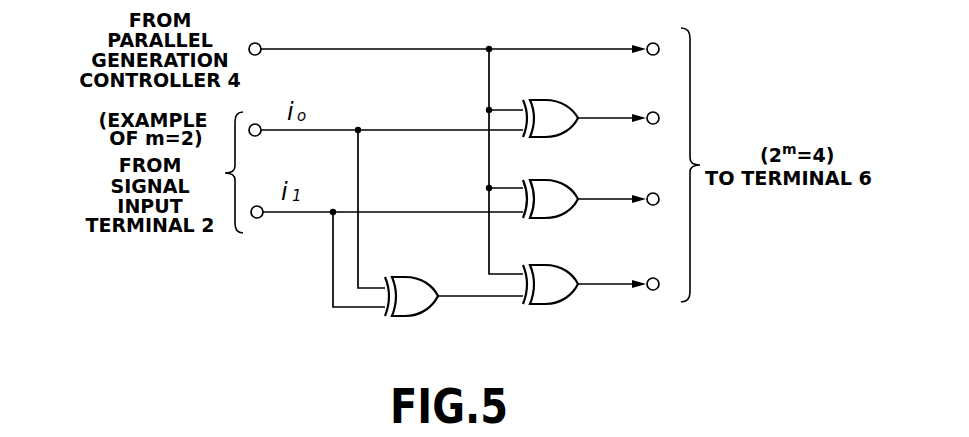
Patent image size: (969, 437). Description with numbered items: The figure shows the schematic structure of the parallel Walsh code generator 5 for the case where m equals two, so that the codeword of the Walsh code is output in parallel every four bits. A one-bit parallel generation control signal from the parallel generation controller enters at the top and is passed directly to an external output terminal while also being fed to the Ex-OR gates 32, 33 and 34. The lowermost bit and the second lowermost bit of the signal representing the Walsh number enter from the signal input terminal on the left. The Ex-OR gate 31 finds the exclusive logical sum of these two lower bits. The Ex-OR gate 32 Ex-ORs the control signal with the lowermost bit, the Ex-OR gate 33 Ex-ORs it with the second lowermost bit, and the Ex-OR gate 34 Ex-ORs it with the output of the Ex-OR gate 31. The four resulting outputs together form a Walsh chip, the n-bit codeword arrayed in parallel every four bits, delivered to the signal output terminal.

The parallel Walsh code generator 5 is at (287, 272).
The Ex-OR gate 31 is at (418, 285).
The Ex-OR gate 32 is at (568, 100).
The Ex-OR gate 33 is at (568, 180).
The Ex-OR gate 34 is at (568, 265).